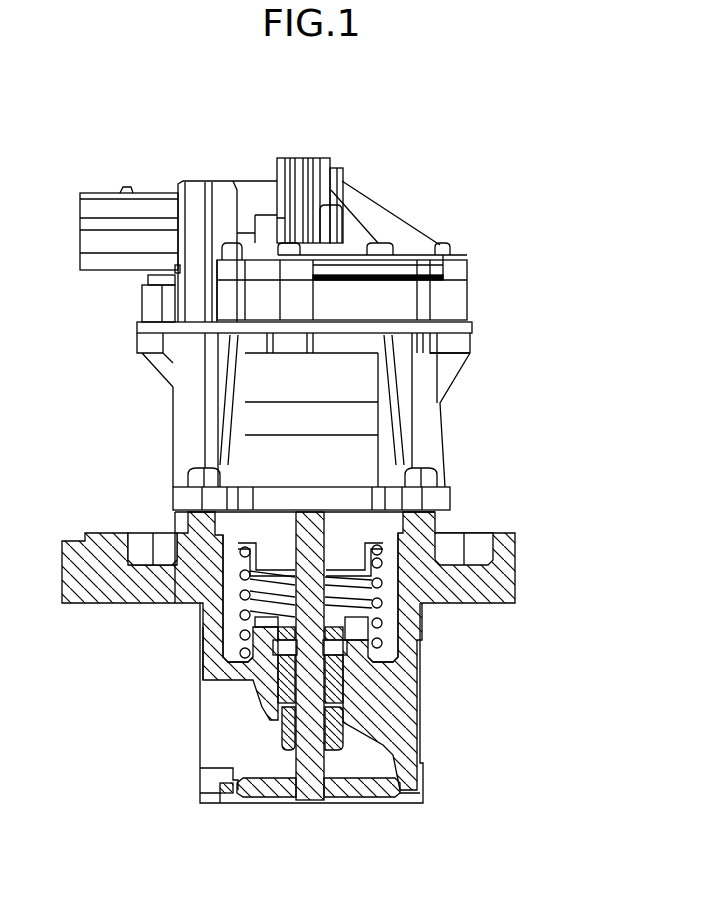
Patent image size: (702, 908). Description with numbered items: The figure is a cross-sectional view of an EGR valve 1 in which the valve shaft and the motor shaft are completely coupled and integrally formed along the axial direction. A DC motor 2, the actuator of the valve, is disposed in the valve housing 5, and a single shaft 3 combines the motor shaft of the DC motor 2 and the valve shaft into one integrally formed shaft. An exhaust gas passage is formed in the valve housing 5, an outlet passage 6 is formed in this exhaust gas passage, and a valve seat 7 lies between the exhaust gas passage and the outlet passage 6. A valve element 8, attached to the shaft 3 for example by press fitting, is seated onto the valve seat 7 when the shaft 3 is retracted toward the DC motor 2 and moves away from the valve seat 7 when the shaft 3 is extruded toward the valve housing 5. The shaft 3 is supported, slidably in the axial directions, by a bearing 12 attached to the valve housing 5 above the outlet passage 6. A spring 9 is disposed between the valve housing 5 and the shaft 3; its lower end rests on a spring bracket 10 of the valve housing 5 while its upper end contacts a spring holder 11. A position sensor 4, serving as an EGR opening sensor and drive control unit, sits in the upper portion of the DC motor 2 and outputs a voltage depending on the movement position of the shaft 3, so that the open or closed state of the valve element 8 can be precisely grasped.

The EGR valve 1 is at (516, 279).
The DC motor 2 is at (185, 428).
The shaft 3 is at (310, 803).
The position sensor 4 is at (258, 197).
The valve housing 5 is at (500, 528).
The outlet passage 6 is at (218, 748).
The valve seat 7 is at (228, 788).
The valve element 8 is at (265, 797).
The spring 9 is at (244, 633).
The spring bracket 10 is at (218, 645).
The spring holder 11 is at (240, 547).
The bearing 12 is at (337, 680).